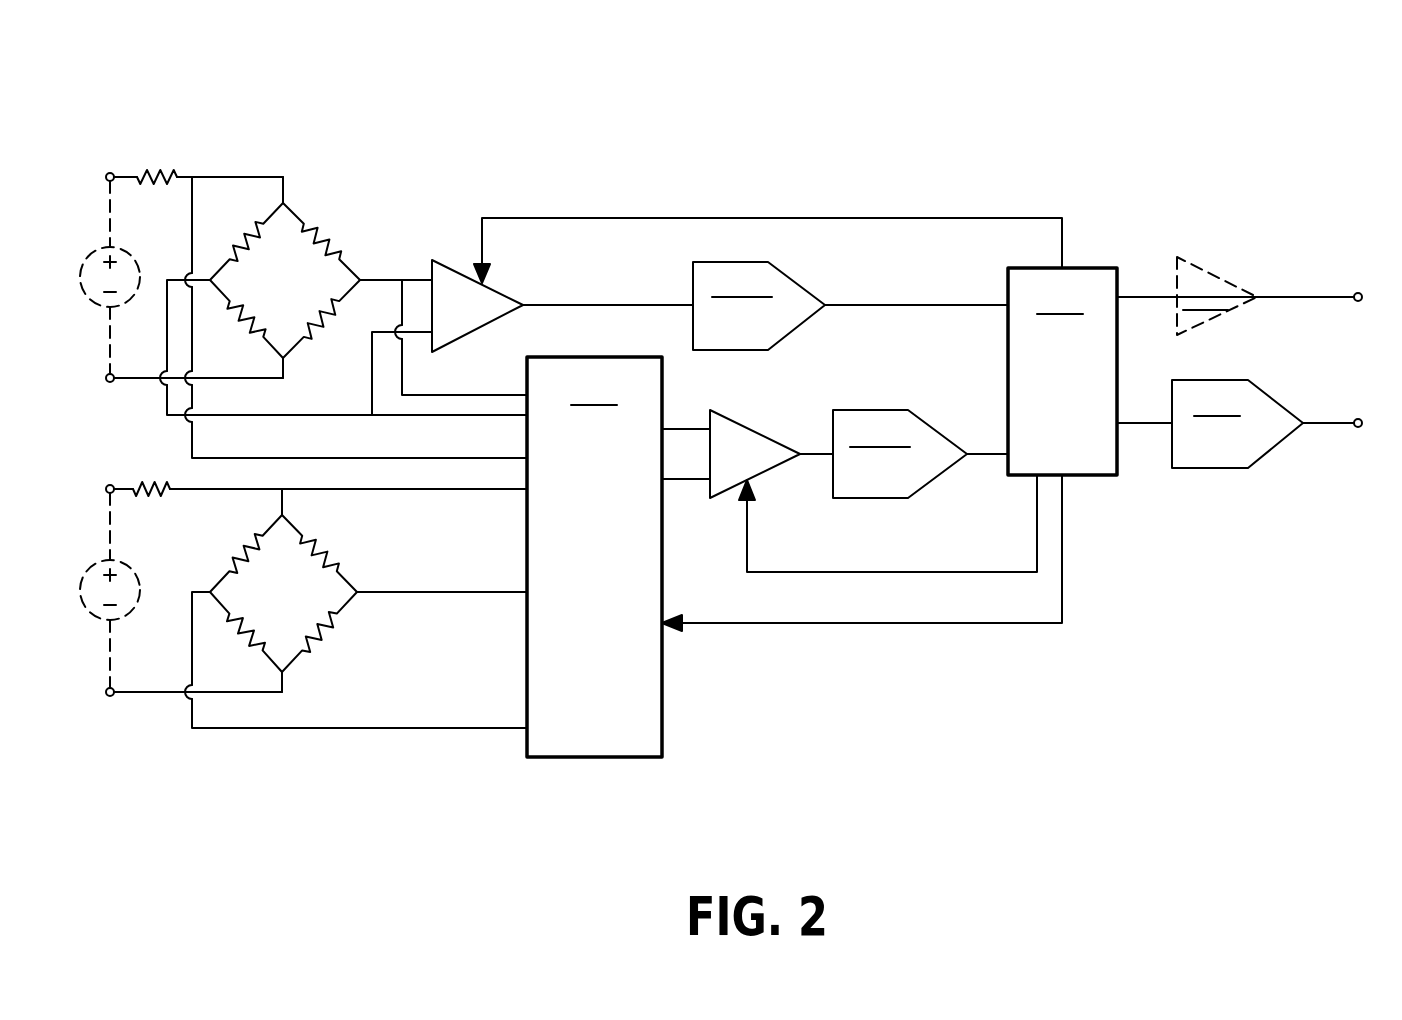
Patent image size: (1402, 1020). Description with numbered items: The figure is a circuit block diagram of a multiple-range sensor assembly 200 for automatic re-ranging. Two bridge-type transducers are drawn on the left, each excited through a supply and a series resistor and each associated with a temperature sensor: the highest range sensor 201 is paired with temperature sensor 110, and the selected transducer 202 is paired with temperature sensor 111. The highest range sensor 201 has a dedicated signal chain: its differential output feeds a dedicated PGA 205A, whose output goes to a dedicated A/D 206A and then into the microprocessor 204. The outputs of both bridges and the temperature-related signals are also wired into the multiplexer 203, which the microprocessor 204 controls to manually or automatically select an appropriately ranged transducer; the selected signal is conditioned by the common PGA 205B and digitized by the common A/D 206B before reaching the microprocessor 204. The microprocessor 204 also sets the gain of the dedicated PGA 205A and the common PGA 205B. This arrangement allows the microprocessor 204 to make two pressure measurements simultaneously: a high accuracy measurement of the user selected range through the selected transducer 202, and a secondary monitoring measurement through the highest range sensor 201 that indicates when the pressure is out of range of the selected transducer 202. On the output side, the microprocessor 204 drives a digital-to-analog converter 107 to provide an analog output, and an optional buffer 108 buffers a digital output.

The multiple-range sensor assembly 200 is at (712, 94).
The temperature sensor 110 is at (153, 168).
The temperature sensor 111 is at (153, 498).
The highest range sensor 201 is at (262, 293).
The selected transducer 202 is at (260, 605).
The multiplexer 203 is at (618, 557).
The microprocessor 204 is at (891, 449).
The dedicated PGA 205A is at (478, 330).
The common PGA 205B is at (724, 412).
The dedicated A/D 206A is at (850, 306).
The common A/D 206B is at (920, 454).
The digital-to-analog converter 107 is at (1254, 425).
The buffer 108 is at (1244, 296).